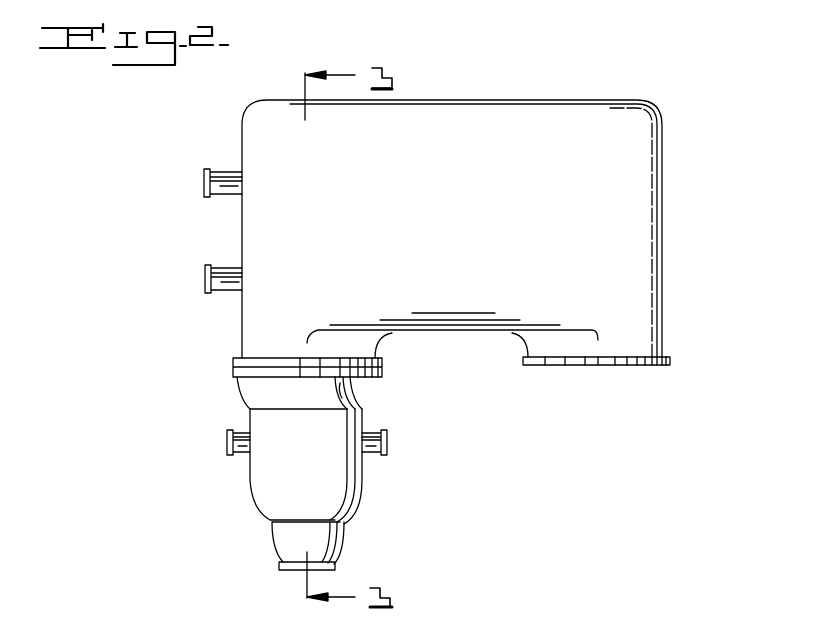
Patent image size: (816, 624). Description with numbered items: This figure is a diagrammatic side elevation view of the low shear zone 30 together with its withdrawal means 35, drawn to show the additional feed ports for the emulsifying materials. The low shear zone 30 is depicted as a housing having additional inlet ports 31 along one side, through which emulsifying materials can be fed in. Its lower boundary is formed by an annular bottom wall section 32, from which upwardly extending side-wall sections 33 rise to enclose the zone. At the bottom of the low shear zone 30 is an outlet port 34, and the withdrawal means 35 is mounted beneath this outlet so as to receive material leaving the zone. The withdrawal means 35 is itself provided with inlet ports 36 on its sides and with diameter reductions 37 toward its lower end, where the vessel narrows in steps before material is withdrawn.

The low shear zone 30 is at (552, 100).
The additional inlet ports 31 is at (222, 172).
The annular bottom wall section 32 is at (490, 333).
The upwardly extending side-wall sections 33 is at (662, 238).
The outlet port 34 is at (283, 352).
The withdrawal means 35 is at (330, 462).
The inlet ports 36 is at (227, 446).
The diameter reductions 37 is at (262, 508).